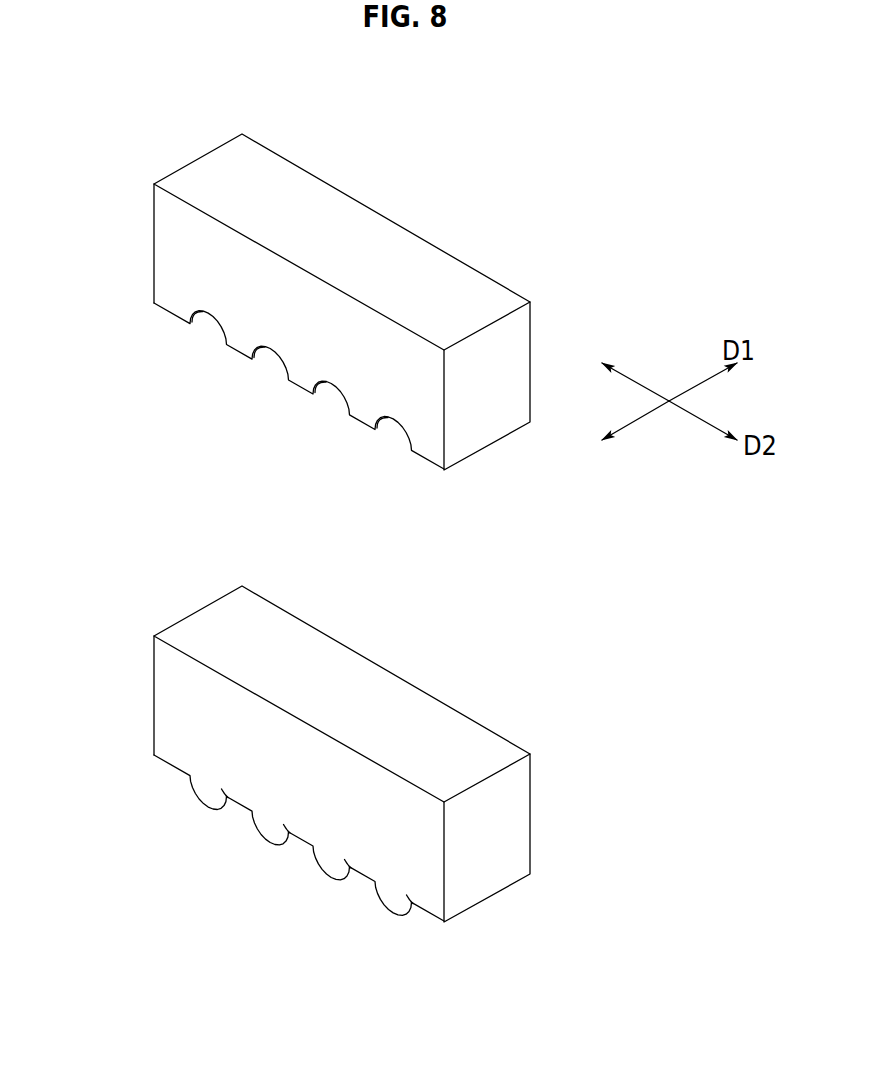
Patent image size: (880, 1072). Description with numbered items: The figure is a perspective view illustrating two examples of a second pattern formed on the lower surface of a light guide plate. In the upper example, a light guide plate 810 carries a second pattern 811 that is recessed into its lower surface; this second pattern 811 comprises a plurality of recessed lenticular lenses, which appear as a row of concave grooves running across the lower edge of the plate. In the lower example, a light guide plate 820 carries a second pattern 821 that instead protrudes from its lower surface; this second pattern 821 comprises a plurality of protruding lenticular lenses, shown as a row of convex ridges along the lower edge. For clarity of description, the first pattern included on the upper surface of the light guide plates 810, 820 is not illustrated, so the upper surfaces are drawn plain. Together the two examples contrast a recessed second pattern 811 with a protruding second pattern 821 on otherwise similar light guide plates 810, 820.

The light guide plate 810 is at (389, 115).
The second pattern 811 is at (149, 285).
The light guide plate 820 is at (389, 567).
The second pattern 821 is at (149, 745).